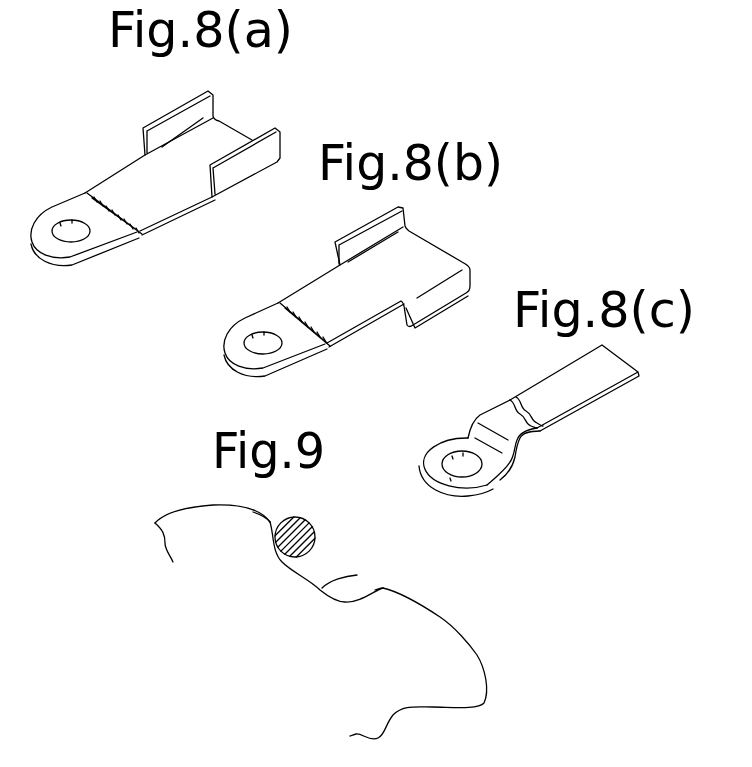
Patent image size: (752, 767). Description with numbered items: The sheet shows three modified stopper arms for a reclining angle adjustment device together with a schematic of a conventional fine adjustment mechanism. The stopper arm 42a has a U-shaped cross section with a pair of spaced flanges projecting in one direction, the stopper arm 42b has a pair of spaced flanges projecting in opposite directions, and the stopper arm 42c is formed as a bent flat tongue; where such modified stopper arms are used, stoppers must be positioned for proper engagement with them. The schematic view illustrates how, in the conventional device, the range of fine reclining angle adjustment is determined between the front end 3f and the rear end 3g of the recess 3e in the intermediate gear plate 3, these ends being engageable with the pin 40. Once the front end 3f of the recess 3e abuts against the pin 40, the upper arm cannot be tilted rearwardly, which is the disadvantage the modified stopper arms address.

In FIG. 8A, the stopper arm 42a is at (245, 132).
In FIG. 8B, the stopper arm 42b is at (437, 245).
In FIG. 8C, the stopper arm 42c is at (622, 353).
In FIG. 9, the pin 40 is at (317, 542).
In FIG. 9, the intermediate gear plate 3 is at (433, 610).
In FIG. 9, the recess 3e is at (357, 575).
In FIG. 9, the front end 3f is at (270, 522).
In FIG. 9, the rear end 3g is at (381, 592).